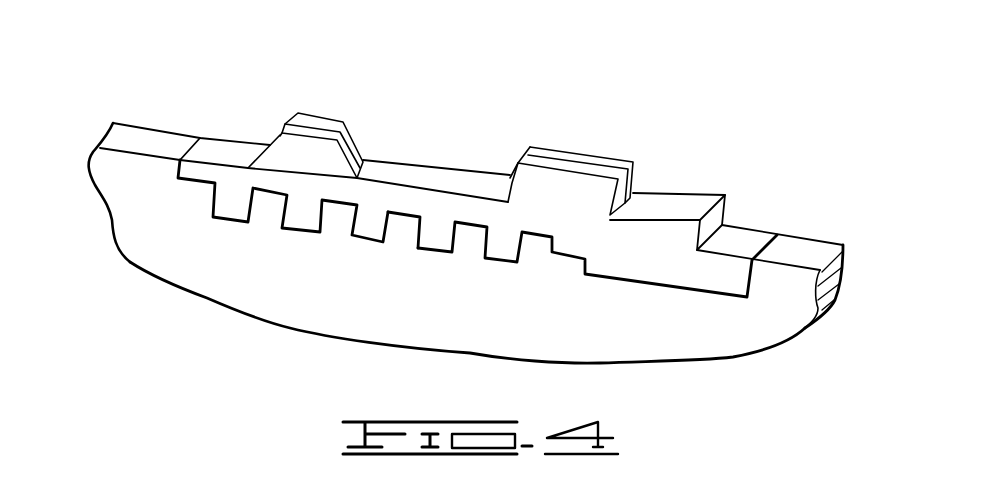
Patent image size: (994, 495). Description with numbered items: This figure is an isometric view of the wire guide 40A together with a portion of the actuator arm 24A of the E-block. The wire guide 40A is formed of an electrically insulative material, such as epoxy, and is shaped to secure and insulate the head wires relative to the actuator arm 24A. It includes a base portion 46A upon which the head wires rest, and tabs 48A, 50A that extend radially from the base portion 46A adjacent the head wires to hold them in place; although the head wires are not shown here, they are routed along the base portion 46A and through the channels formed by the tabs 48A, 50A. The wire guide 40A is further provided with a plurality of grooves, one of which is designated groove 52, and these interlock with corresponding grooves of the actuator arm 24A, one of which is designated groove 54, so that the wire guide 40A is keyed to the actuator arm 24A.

The actuator arm 24A is at (202, 247).
The wire guide 40A is at (403, 100).
The base portion 46A is at (405, 170).
The tab 48A is at (328, 113).
The tab 50A is at (583, 207).
The groove 52 is at (408, 213).
The groove 54 is at (363, 242).